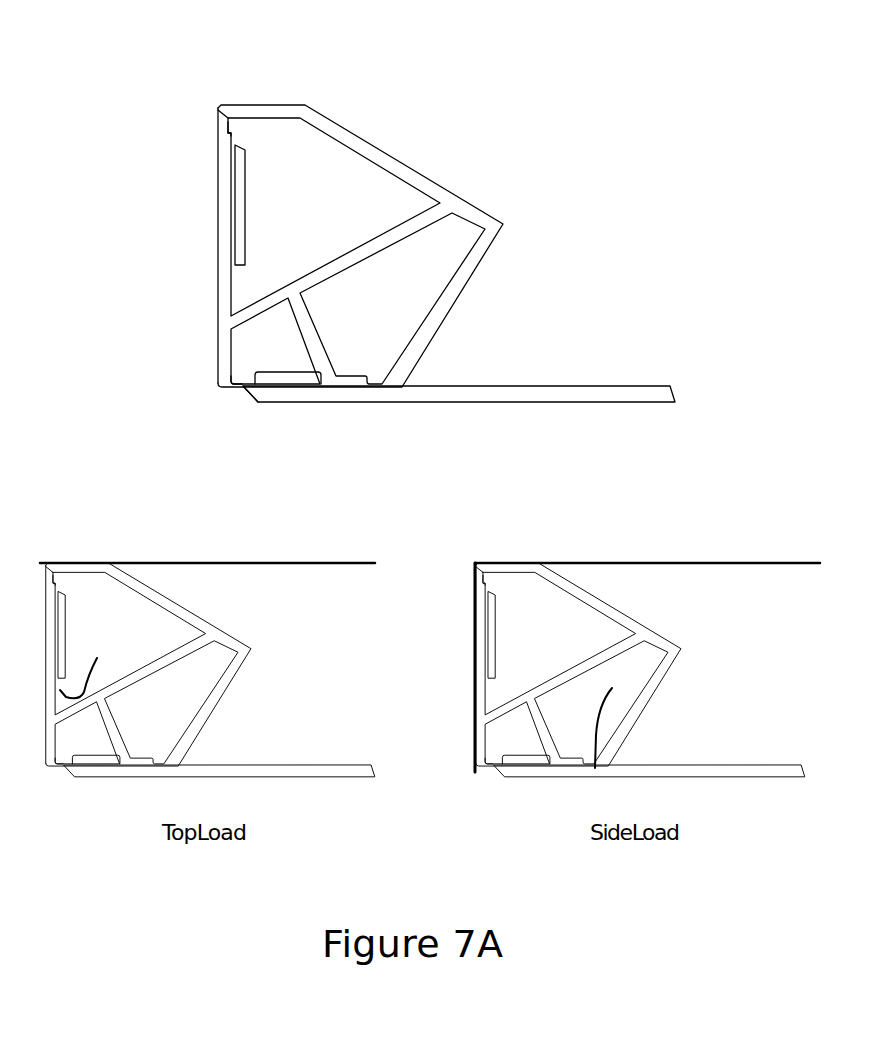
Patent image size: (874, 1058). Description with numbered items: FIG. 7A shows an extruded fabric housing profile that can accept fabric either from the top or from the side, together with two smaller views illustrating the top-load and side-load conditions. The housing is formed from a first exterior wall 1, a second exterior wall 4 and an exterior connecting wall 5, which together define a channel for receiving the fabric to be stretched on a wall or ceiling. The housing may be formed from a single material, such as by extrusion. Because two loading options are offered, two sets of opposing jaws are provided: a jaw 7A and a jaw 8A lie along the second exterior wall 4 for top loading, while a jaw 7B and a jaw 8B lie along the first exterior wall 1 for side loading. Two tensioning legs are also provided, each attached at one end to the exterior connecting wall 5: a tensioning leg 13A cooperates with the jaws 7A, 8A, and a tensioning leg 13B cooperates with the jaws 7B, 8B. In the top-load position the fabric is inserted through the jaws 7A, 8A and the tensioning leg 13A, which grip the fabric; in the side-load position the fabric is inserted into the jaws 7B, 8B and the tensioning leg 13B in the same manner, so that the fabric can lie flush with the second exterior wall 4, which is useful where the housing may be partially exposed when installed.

The first exterior wall 1 is at (653, 388).
The second exterior wall 4 is at (224, 316).
The exterior connecting wall 5 is at (397, 160).
The jaw 7A is at (228, 136).
The jaw 7B is at (243, 387).
The jaw 8A is at (224, 116).
The jaw 8B is at (233, 381).
The tensioning leg 13A is at (240, 195).
The tensioning leg 13B is at (337, 373).